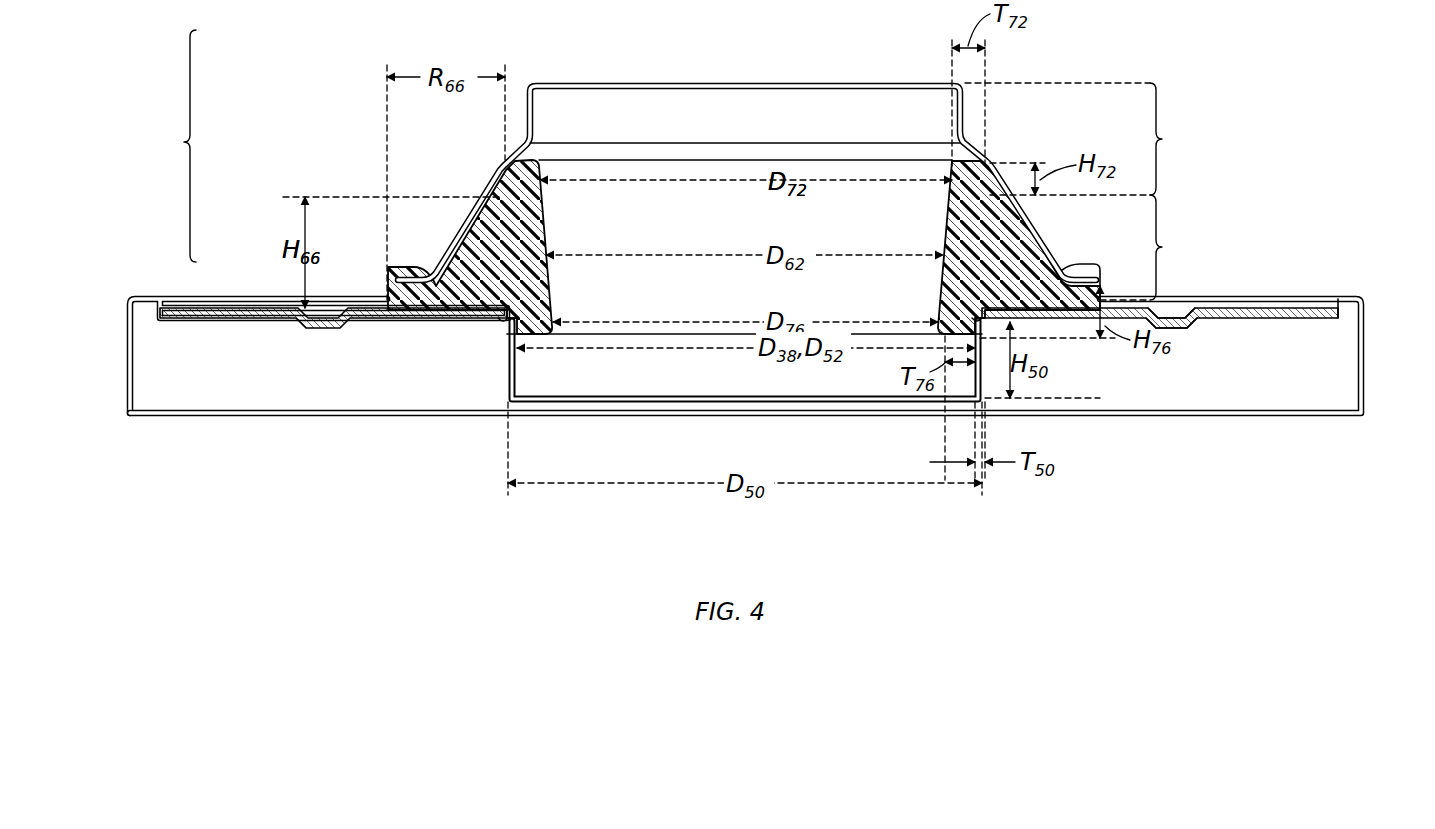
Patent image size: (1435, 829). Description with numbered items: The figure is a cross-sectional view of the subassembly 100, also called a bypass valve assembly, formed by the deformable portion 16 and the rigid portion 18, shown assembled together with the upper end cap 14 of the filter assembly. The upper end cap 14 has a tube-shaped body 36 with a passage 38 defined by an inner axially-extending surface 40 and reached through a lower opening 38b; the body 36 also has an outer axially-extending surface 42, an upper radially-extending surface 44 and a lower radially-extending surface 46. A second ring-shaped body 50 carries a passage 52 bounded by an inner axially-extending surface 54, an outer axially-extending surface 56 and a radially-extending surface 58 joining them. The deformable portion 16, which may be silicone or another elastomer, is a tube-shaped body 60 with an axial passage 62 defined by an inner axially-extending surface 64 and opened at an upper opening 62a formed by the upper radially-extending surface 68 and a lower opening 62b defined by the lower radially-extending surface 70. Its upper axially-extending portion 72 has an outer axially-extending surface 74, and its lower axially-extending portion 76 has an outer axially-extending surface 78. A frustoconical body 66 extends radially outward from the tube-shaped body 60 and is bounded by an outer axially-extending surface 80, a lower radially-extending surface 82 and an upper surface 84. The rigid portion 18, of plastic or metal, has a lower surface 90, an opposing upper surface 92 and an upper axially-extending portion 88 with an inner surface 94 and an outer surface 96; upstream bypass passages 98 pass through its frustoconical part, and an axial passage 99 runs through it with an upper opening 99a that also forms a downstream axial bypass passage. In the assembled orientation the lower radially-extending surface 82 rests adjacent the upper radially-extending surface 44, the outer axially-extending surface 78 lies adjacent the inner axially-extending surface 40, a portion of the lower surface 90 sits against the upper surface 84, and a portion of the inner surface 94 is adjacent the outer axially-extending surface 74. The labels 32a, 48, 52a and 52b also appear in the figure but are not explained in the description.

The upper end cap 14 is at (135, 268).
The deformable portion 16 is at (283, 275).
The rigid portion 18 is at (517, 54).
The bottom wall outer surface 32a is at (750, 413).
The tube-shaped body 36 is at (1068, 306).
The passage 38 is at (606, 362).
The lower opening 38b is at (750, 425).
The inner axially-extending surface 40 is at (968, 325).
The outer axially-extending surface 42 is at (1366, 330).
The upper radially-extending surface 44 is at (1226, 300).
The lower radially-extending surface 46 is at (1225, 315).
The outer shell end 48 is at (125, 325).
The second ring-shaped body 50 is at (732, 368).
The passage 52 is at (726, 397).
The cup bottom outer surface 52a is at (737, 352).
The cup bottom inner surface 52b is at (770, 403).
The inner axially-extending surface 54 is at (520, 395).
The outer axially-extending surface 56 is at (500, 321).
The radially-extending surface 58 is at (986, 402).
The tube-shaped body 60 is at (999, 247).
The axial passage 62 is at (756, 148).
The upper opening 62a is at (706, 155).
The lower opening 62b is at (750, 361).
The inner axially-extending surface 64 is at (954, 254).
The frustoconical body 66 is at (464, 250).
The upper radially-extending surface 68 is at (522, 158).
The lower radially-extending surface 70 is at (507, 370).
The upper axially-extending portion 72 is at (534, 160).
The outer axially-extending surface 74 is at (508, 172).
The lower axially-extending portion 76 is at (503, 335).
The outer axially-extending surface 78 is at (545, 328).
The outer axially-extending surface 80 is at (420, 290).
The lower radially-extending surface 82 is at (425, 312).
The upper surface 84 is at (470, 240).
The upper axially-extending portion 88 is at (1081, 139).
The lower surface 90 is at (386, 267).
The upper surface 92 is at (496, 212).
The inner surface 94 is at (546, 214).
The outer surface 96 is at (512, 198).
The upstream bypass passages 98 is at (446, 262).
The axial passage 99 is at (776, 156).
The upper opening 99a is at (727, 80).
The subassembly 100 is at (168, 146).